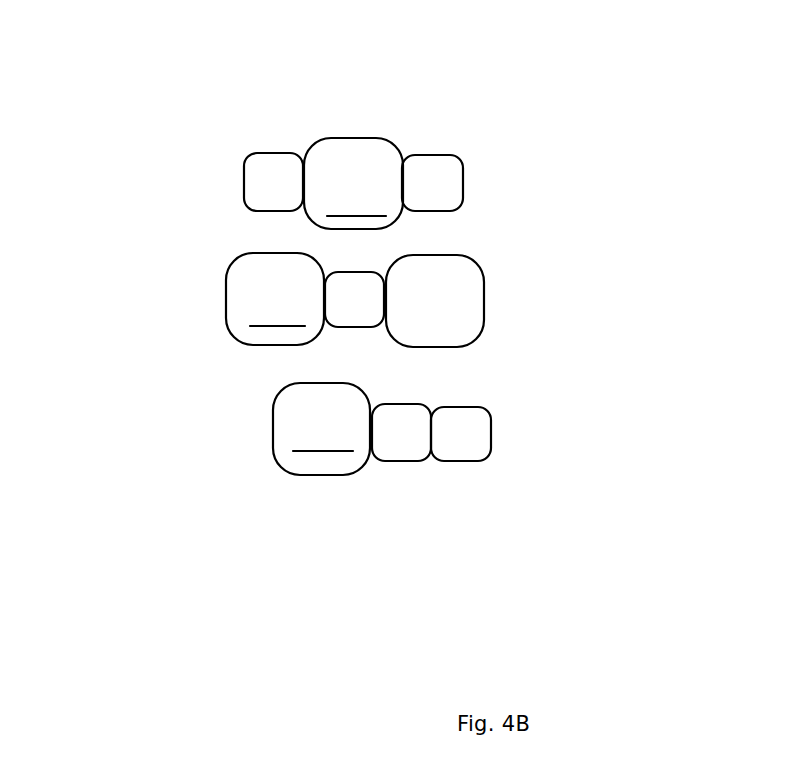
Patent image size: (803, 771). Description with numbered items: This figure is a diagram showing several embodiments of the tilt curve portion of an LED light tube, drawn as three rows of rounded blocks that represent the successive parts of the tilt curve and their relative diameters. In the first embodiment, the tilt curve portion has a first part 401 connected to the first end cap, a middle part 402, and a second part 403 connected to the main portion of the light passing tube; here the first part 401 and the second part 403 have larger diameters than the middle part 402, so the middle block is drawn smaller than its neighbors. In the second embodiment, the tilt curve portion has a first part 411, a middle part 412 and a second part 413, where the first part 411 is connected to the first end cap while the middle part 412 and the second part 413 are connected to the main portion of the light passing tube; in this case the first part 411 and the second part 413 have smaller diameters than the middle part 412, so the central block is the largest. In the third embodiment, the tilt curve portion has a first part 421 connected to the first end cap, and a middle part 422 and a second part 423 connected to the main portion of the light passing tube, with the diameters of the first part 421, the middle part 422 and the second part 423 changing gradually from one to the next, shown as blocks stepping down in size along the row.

The first part 401 is at (260, 295).
The middle part 402 is at (353, 323).
The second part 403 is at (457, 318).
The first part 411 is at (268, 185).
The middle part 412 is at (355, 162).
The second part 413 is at (442, 183).
The first part 421 is at (332, 457).
The middle part 422 is at (409, 445).
The second part 423 is at (475, 435).